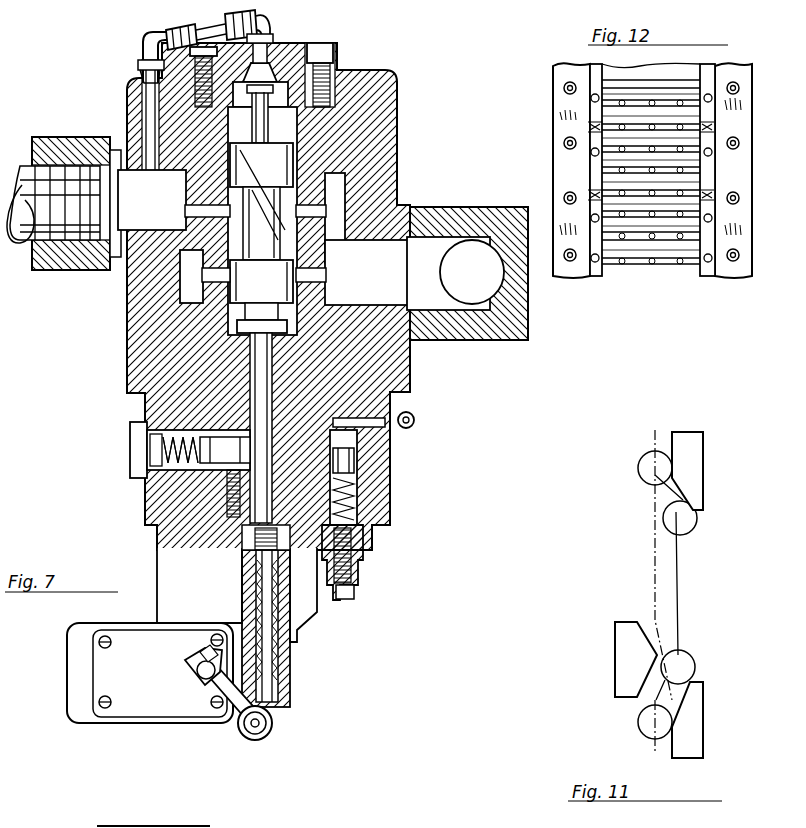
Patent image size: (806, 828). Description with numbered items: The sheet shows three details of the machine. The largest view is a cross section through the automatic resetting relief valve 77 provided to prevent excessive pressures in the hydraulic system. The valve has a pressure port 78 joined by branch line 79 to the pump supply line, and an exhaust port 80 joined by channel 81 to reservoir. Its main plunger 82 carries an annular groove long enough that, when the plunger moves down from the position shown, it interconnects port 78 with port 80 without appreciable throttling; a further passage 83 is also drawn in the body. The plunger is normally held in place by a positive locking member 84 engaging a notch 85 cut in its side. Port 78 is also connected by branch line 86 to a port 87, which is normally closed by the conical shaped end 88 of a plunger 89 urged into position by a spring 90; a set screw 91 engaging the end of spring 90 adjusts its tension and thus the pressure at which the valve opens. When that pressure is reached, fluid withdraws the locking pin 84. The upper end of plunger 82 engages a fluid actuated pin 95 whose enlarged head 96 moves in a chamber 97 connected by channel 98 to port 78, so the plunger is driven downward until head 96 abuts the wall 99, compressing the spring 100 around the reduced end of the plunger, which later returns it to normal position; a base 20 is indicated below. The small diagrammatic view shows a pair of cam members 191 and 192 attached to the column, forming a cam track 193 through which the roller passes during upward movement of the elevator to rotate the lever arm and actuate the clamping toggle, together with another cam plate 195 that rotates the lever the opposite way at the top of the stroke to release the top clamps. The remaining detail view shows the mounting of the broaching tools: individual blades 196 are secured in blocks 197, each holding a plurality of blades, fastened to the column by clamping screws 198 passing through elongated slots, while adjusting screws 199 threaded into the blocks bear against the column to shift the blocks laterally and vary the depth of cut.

In FIG. 7, the base 20 is at (187, 815).
In FIG. 7, the automatic resetting relief valve 77 is at (385, 150).
In FIG. 7, the pressure port 78 is at (130, 190).
In FIG. 7, the branch line 79 is at (20, 165).
In FIG. 7, the exhaust port 80 is at (380, 265).
In FIG. 7, the channel 81 is at (472, 255).
In FIG. 7, the main plunger 82 is at (275, 165).
In FIG. 7, the return passage 83 is at (192, 270).
In FIG. 7, the locking member 84 is at (220, 470).
In FIG. 7, the notch 85 is at (150, 432).
In FIG. 7, the branch line 86 is at (150, 50).
In FIG. 7, the port 87 is at (362, 425).
In FIG. 7, the conical shaped end 88 is at (352, 448).
In FIG. 7, the plunger 89 is at (352, 468).
In FIG. 7, the spring 90 is at (362, 533).
In FIG. 7, the set screw 91 is at (355, 592).
In FIG. 7, the fluid actuated pin 95 is at (290, 122).
In FIG. 7, the enlarged head 96 is at (262, 95).
In FIG. 7, the chamber 97 is at (322, 52).
In FIG. 7, the channel 98 is at (225, 18).
In FIG. 7, the wall 99 is at (300, 112).
In FIG. 7, the spring 100 is at (300, 651).
In FIG. 11, the cam member 191 is at (697, 729).
In FIG. 11, the cam member 192 is at (618, 685).
In FIG. 11, the cam track 193 is at (683, 692).
In FIG. 11, the cam plate 195 is at (695, 467).
In FIG. 12, the blades 196 is at (615, 258).
In FIG. 12, the blocks 197 is at (592, 158).
In FIG. 12, the clamping screws 198 is at (590, 96).
In FIG. 12, the adjusting screws 199 is at (713, 127).